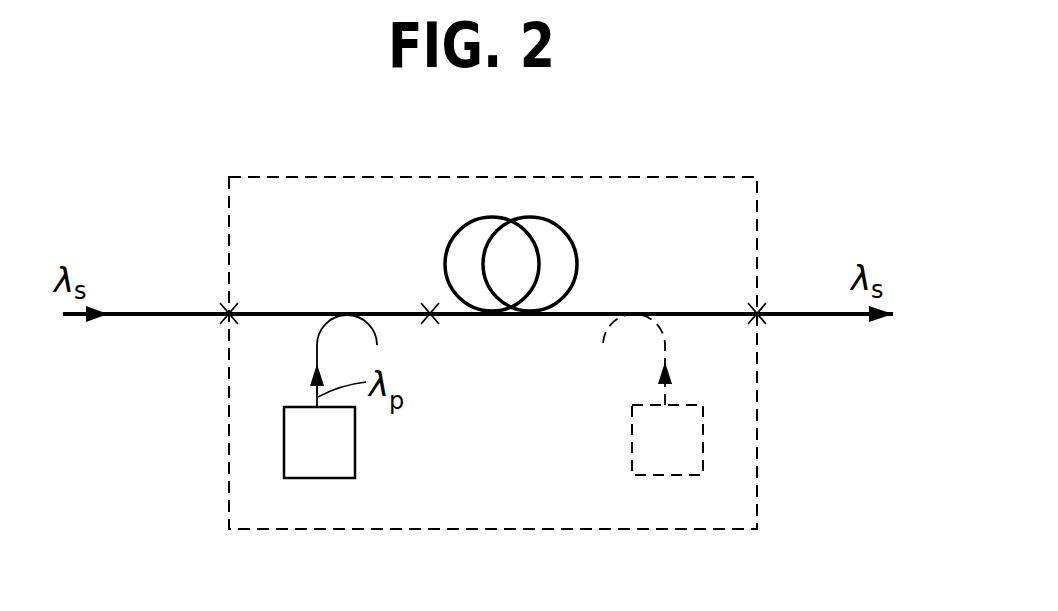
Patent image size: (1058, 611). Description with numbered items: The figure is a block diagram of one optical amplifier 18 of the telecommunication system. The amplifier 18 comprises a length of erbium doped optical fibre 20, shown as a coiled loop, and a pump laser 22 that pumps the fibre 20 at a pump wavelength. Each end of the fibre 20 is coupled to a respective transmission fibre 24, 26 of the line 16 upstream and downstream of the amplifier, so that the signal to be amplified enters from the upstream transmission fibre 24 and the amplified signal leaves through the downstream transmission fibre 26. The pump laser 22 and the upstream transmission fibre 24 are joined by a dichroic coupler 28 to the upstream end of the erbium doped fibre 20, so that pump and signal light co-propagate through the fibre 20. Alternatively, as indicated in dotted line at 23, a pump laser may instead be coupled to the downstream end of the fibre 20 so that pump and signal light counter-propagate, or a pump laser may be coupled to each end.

The line 16 is at (121, 325).
The optical amplifier 18 is at (712, 175).
The erbium doped optical fibre 20 is at (458, 228).
The pump laser 22 is at (355, 437).
The pump laser 23 is at (633, 440).
The transmission fibre 24 is at (175, 316).
The transmission fibre 26 is at (803, 316).
The dichroic coupler 28 is at (348, 313).